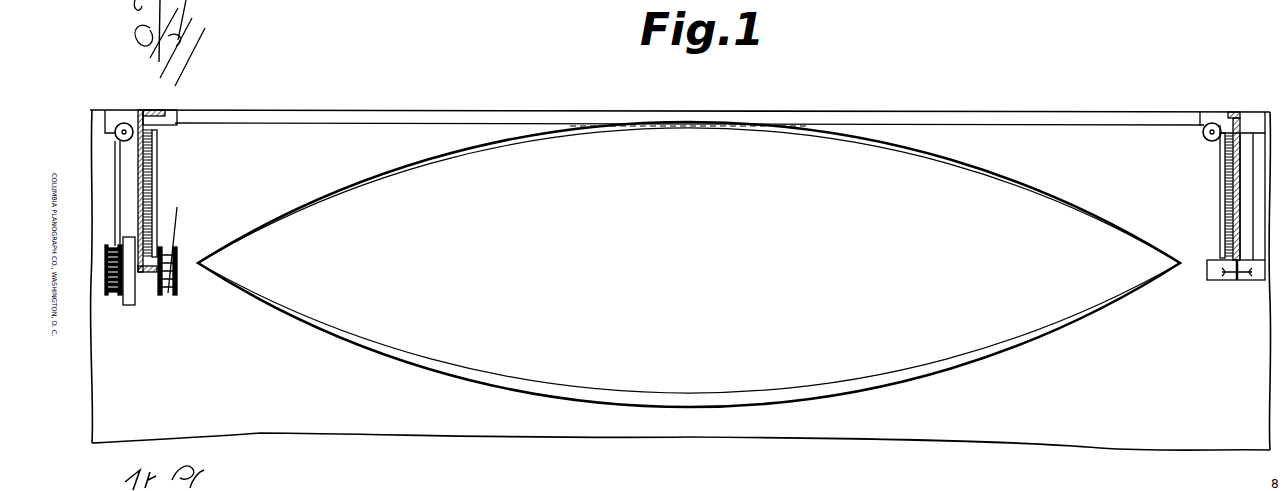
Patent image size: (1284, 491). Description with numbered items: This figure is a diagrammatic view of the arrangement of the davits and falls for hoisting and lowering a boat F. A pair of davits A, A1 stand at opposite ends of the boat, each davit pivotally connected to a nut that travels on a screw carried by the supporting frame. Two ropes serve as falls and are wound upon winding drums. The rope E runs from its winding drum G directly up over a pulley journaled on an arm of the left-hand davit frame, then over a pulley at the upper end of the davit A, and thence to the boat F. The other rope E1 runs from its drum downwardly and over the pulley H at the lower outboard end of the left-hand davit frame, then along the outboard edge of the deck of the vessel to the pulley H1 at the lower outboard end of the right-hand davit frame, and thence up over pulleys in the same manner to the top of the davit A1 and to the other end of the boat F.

The pulley H is at (126, 123).
The rope E1 is at (114, 172).
The davit A is at (155, 197).
The rope E is at (179, 212).
The winding drum G is at (110, 296).
The boat F is at (689, 264).
The pulley H1 is at (1214, 123).
The davit A1 is at (1225, 180).